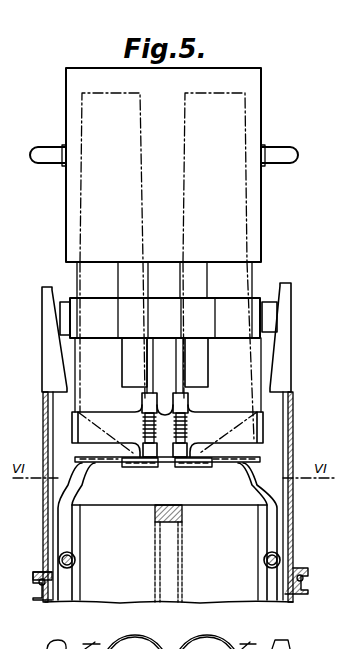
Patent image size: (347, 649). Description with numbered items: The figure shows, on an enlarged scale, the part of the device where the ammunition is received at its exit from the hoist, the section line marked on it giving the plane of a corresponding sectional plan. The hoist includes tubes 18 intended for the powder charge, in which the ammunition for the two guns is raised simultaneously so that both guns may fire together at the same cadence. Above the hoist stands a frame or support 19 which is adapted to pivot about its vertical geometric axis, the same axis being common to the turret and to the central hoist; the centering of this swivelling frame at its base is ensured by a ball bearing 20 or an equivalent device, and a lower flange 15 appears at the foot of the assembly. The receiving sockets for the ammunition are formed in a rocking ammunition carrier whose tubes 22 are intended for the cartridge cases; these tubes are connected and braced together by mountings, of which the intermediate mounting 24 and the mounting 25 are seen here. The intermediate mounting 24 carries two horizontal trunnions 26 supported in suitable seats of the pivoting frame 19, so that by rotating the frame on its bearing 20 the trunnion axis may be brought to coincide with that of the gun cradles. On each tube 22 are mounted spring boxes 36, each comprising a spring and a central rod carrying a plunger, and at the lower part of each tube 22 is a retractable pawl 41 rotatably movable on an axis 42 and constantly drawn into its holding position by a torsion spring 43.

The base flange 15 is at (296, 600).
The tube 18 is at (98, 514).
The frame or support 19 is at (293, 433).
The ball bearing 20 is at (298, 577).
The tube 22 is at (92, 400).
The intermediate mounting 24 is at (241, 307).
The mounting 25 is at (244, 417).
The horizontal trunnion 26 is at (264, 316).
The spring box 36 is at (122, 378).
The retractable pawl 41 is at (140, 461).
The axis 42 is at (186, 430).
The torsion spring 43 is at (144, 428).